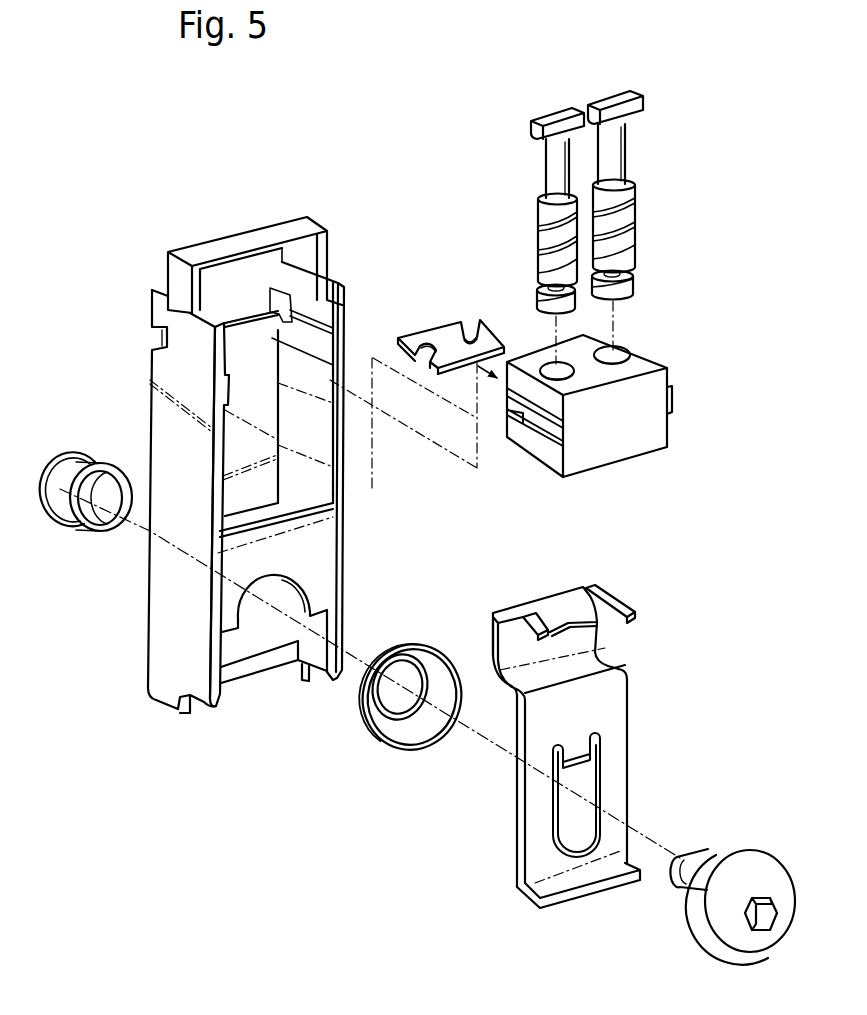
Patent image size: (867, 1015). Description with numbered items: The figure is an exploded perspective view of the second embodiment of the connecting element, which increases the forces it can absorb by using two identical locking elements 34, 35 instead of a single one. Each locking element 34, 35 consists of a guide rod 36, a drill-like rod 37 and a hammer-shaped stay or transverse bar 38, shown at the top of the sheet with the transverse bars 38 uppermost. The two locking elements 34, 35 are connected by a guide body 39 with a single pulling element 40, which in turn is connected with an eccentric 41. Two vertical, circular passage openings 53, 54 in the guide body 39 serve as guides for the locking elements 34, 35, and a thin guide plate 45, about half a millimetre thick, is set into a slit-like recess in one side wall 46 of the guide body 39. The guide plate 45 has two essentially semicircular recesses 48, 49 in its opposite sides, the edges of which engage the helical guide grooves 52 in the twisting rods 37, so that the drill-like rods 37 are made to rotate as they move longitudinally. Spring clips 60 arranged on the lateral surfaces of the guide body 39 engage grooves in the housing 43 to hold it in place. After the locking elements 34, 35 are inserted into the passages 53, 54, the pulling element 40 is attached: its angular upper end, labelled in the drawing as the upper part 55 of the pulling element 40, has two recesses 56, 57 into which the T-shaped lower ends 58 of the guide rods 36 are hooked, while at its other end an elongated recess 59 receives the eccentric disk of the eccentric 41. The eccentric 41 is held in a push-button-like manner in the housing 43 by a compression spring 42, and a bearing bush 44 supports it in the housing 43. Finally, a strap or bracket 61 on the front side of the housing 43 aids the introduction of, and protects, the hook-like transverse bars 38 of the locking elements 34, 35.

The locking element 34 is at (646, 128).
The locking element 35 is at (540, 163).
The guide rod 36 is at (549, 176).
The drill-like rod 37 is at (548, 228).
The hammer-shaped transverse bar 38 is at (536, 118).
The guide body 39 is at (678, 383).
The pulling element 40 is at (630, 708).
The eccentric 41 is at (737, 845).
The compression spring 42 is at (381, 742).
The housing 43 is at (146, 632).
The bearing bush 44 is at (82, 453).
The guide plate 45 is at (434, 321).
The side wall 46 is at (509, 425).
The semicircular recess 48 is at (470, 334).
The semicircular recess 49 is at (410, 343).
The helical guide groove 52 is at (550, 253).
The passage opening 53 is at (621, 352).
The passage opening 54 is at (554, 366).
The bracket upper web 55 is at (493, 630).
The recess 56 is at (586, 599).
The recess 57 is at (531, 600).
The T-shaped lower end 58 is at (544, 300).
The elongated recess 59 is at (558, 823).
The spring clip 60 is at (520, 407).
The bracket 61 is at (240, 242).